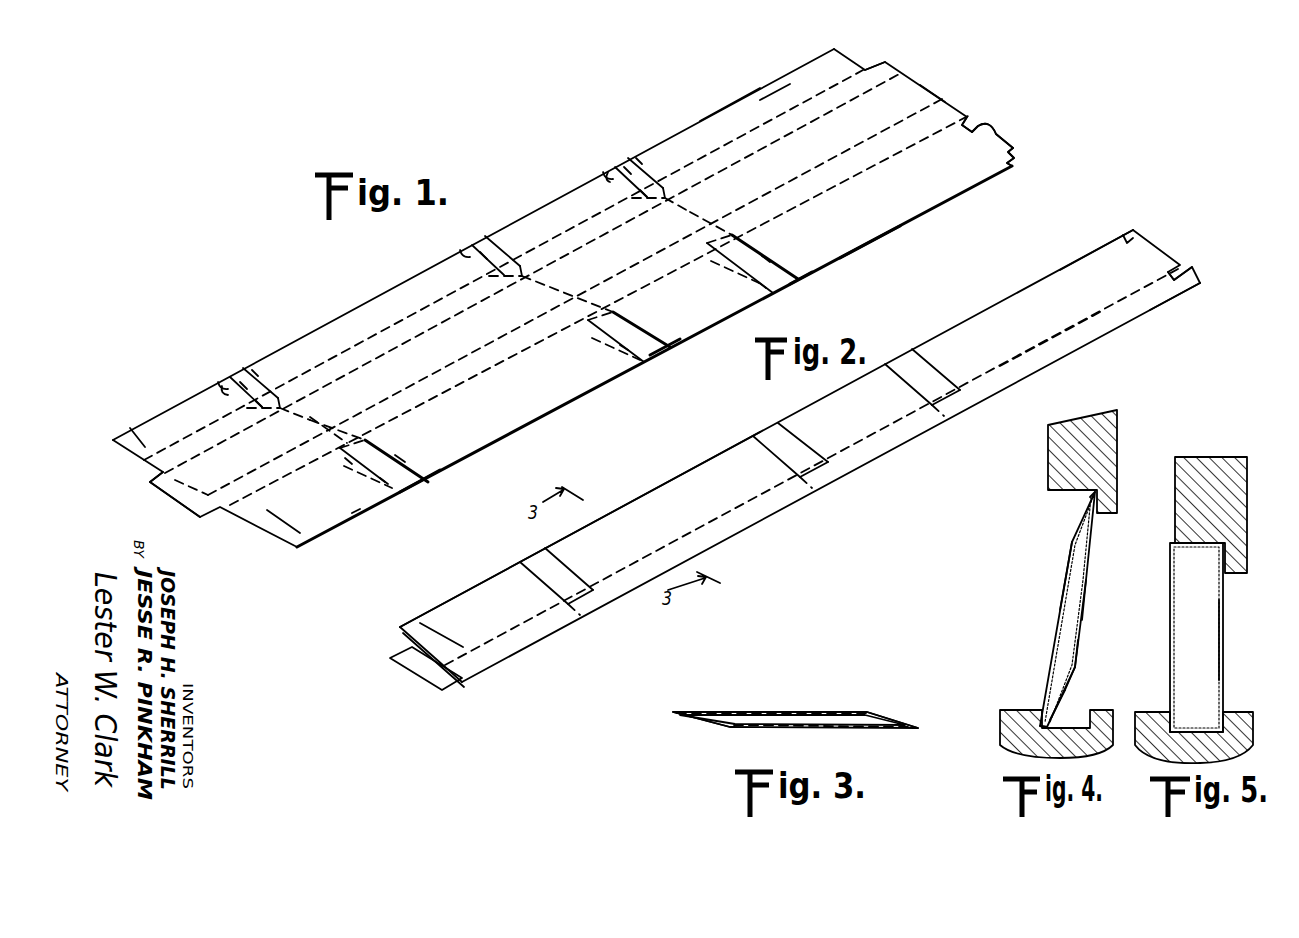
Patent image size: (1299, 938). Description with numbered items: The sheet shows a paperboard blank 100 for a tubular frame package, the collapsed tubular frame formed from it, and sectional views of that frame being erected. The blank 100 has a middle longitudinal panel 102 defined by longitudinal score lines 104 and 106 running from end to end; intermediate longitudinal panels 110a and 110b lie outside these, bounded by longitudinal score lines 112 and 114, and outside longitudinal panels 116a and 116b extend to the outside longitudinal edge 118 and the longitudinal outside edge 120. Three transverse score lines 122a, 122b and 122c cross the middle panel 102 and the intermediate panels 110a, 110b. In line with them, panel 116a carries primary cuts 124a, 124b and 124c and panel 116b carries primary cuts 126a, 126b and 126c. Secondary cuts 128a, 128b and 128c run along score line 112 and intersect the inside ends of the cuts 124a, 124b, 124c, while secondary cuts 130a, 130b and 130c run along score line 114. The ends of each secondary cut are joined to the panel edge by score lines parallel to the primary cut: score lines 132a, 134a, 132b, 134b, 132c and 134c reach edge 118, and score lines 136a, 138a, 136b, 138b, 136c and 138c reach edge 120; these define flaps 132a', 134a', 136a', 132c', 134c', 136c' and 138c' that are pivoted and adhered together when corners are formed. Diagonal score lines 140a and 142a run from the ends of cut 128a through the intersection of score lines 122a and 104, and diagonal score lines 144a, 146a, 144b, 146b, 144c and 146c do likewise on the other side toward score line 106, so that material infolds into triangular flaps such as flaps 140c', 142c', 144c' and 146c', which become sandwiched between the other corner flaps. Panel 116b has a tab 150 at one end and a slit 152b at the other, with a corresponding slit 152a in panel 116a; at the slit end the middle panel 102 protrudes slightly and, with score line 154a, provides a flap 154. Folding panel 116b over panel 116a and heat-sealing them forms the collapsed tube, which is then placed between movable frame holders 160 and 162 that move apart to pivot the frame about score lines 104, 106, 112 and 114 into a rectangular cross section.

In FIG. 1, the blank 100 is at (566, 178).
In FIG. 1, the middle longitudinal panel 102 is at (935, 97).
In FIG. 3, the middle longitudinal panel 102 is at (860, 728).
In FIG. 4, the middle longitudinal panel 102 is at (1055, 618).
In FIG. 1, the longitudinal score line 104 is at (843, 107).
In FIG. 4, the longitudinal score line 104 is at (1068, 543).
In FIG. 1, the longitudinal score line 106 is at (867, 157).
In FIG. 4, the longitudinal score line 106 is at (1049, 724).
In FIG. 1, the intermediate longitudinal panel 110a is at (895, 68).
In FIG. 3, the intermediate longitudinal panel 110a is at (697, 722).
In FIG. 1, the intermediate longitudinal panel 110b is at (965, 118).
In FIG. 2, the intermediate longitudinal panel 110b is at (1162, 295).
In FIG. 3, the intermediate longitudinal panel 110b is at (910, 710).
In FIG. 4, the intermediate longitudinal panel 110b is at (1060, 696).
In FIG. 1, the longitudinal score line 112 is at (808, 100).
In FIG. 4, the longitudinal score line 112 is at (1093, 493).
In FIG. 1, the longitudinal score line 114 is at (888, 163).
In FIG. 2, the longitudinal score line 114 is at (1036, 345).
In FIG. 4, the longitudinal score line 114 is at (1072, 672).
In FIG. 1, the outside longitudinal panel 116a is at (780, 75).
In FIG. 2, the outside longitudinal panel 116a is at (410, 648).
In FIG. 3, the outside longitudinal panel 116a is at (790, 712).
In FIG. 4, the outside longitudinal panel 116a is at (1084, 572).
In FIG. 5, the outside longitudinal panel 116a is at (1220, 630).
In FIG. 1, the outside longitudinal panel 116b is at (1013, 158).
In FIG. 2, the outside longitudinal panel 116b is at (1073, 262).
In FIG. 3, the outside longitudinal panel 116b is at (853, 703).
In FIG. 4, the outside longitudinal panel 116b is at (1078, 640).
In FIG. 5, the outside longitudinal panel 116b is at (1225, 602).
In FIG. 1, the outside longitudinal edge 118 is at (735, 104).
In FIG. 1, the longitudinal outside edge 120 is at (878, 234).
In FIG. 1, the transverse score line 122a is at (695, 205).
In FIG. 2, the transverse score line 122a is at (958, 408).
In FIG. 1, the transverse score line 122b is at (548, 268).
In FIG. 1, the transverse score line 122c is at (312, 418).
In FIG. 1, the primary cut 124a is at (623, 163).
In FIG. 1, the primary cut 124b is at (482, 244).
In FIG. 1, the primary cut 124c is at (241, 377).
In FIG. 1, the primary cut 126a is at (802, 284).
In FIG. 1, the primary cut 126b is at (648, 348).
In FIG. 1, the primary cut 126c is at (412, 475).
In FIG. 1, the secondary cut 128a is at (666, 182).
In FIG. 1, the secondary cut 128b is at (515, 258).
In FIG. 1, the secondary cut 128c is at (283, 390).
In FIG. 1, the secondary cut 130a is at (735, 268).
In FIG. 1, the secondary cut 130b is at (597, 340).
In FIG. 1, the secondary cut 130c is at (370, 466).
In FIG. 1, the score line 132a is at (660, 149).
In FIG. 1, the flap 132a' is at (652, 128).
In FIG. 1, the score line 132b is at (500, 240).
In FIG. 1, the score line 132c is at (280, 355).
In FIG. 1, the flap 132c' is at (273, 333).
In FIG. 1, the score line 134a is at (608, 190).
In FIG. 1, the flap 134a' is at (584, 145).
In FIG. 1, the score line 134b is at (462, 255).
In FIG. 1, the score line 134c is at (217, 378).
In FIG. 1, the flap 134c' is at (210, 353).
In FIG. 1, the score line 136a is at (785, 257).
In FIG. 1, the flap 136a' is at (796, 242).
In FIG. 1, the score line 136b is at (650, 330).
In FIG. 1, the score line 136c is at (416, 460).
In FIG. 1, the flap 136c' is at (428, 440).
In FIG. 1, the score line 138a is at (762, 287).
In FIG. 1, the score line 138b is at (613, 352).
In FIG. 1, the score line 138c is at (402, 505).
In FIG. 1, the flap 138c' is at (357, 534).
In FIG. 1, the diagonal score line 140a is at (680, 196).
In FIG. 1, the triangular flap 140c' is at (311, 395).
In FIG. 1, the diagonal score line 142a is at (650, 205).
In FIG. 1, the triangular flap 142c' is at (255, 430).
In FIG. 1, the diagonal score line 144a is at (742, 232).
In FIG. 2, the diagonal score line 144a is at (970, 395).
In FIG. 1, the diagonal score line 144b is at (588, 316).
In FIG. 2, the diagonal score line 144b is at (832, 470).
In FIG. 1, the diagonal score line 144c is at (367, 423).
In FIG. 2, the diagonal score line 144c is at (598, 591).
In FIG. 1, the triangular flap 144c' is at (370, 417).
In FIG. 1, the diagonal score line 146a is at (712, 252).
In FIG. 2, the diagonal score line 146a is at (938, 420).
In FIG. 1, the diagonal score line 146b is at (582, 320).
In FIG. 2, the diagonal score line 146b is at (810, 486).
In FIG. 1, the diagonal score line 146c is at (339, 453).
In FIG. 2, the diagonal score line 146c is at (566, 616).
In FIG. 1, the triangular flap 146c' is at (316, 468).
In FIG. 1, the tab 150 is at (1000, 135).
In FIG. 2, the tab 150 is at (1140, 248).
In FIG. 1, the slit 152a is at (140, 433).
In FIG. 1, the slit 152b is at (268, 535).
In FIG. 2, the slit 152b is at (446, 633).
In FIG. 1, the flap 154 is at (182, 505).
In FIG. 2, the flap 154 is at (420, 680).
In FIG. 1, the score line 154a is at (150, 490).
In FIG. 4, the movable frame holder 160 is at (1110, 430).
In FIG. 5, the movable frame holder 160 is at (1218, 470).
In FIG. 4, the movable frame holder 162 is at (1022, 730).
In FIG. 5, the movable frame holder 162 is at (1237, 720).